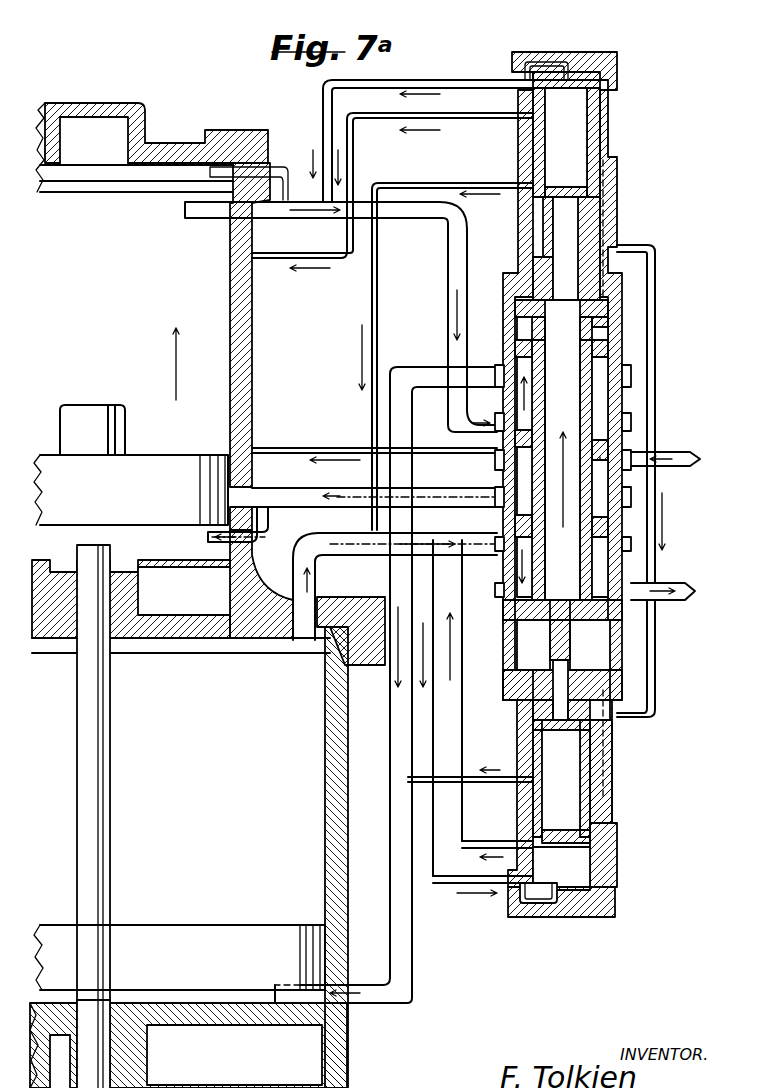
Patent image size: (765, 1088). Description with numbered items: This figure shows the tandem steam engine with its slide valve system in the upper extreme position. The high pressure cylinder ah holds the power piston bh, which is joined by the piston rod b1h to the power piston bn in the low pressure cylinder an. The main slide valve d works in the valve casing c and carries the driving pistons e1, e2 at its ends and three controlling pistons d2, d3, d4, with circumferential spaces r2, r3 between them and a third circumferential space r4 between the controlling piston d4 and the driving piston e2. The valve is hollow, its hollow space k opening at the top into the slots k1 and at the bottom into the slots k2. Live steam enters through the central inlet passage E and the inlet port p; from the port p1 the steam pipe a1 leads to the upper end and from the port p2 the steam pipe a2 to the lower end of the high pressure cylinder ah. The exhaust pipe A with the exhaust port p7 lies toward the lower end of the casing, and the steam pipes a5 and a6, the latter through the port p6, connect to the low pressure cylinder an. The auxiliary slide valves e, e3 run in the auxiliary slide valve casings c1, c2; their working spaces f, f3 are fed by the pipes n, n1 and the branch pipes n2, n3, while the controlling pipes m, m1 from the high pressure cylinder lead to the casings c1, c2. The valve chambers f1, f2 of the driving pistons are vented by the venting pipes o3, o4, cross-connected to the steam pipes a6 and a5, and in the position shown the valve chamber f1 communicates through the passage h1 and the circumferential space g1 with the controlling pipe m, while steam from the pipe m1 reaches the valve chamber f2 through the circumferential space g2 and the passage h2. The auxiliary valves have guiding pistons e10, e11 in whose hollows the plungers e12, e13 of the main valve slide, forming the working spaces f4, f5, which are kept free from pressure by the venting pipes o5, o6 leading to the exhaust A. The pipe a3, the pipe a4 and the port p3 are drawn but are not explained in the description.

The pipe a3 is at (284, 168).
The pipe n is at (444, 90).
The controlling pipe m is at (275, 262).
The venting pipe o3 is at (372, 285).
The steam pipe a1 is at (455, 250).
The high pressure cylinder ah is at (230, 320).
The power piston bh is at (143, 470).
The controlling pipe m1 is at (331, 448).
The steam pipe a2 is at (300, 497).
The pipe a4 is at (259, 538).
The steam pipe a6 is at (347, 545).
The steam pipe a5 is at (408, 385).
The venting pipe o4 is at (488, 784).
The pipe n1 is at (447, 885).
The low pressure cylinder an is at (322, 818).
The piston rod b1h is at (100, 690).
The power piston bn is at (185, 942).
The valve casing c is at (512, 312).
The passage h1 is at (610, 178).
The working space f is at (616, 66).
The branch pipe n2 is at (566, 62).
The auxiliary slide valve e is at (608, 96).
The auxiliary slide valve casing c1 is at (605, 117).
The circumferential space g1 is at (590, 142).
The working space f4 is at (535, 232).
The guiding piston e10 is at (590, 225).
The plunger e12 is at (572, 273).
The valve chamber f1 is at (608, 320).
The slots k1 is at (592, 327).
The driving piston e1 is at (606, 336).
The controlling piston d2 is at (612, 350).
The hollow space k is at (562, 450).
The main slide valve d is at (578, 408).
The circumferential space r2 is at (598, 412).
The controlling piston d3 is at (612, 448).
The circumferential space r3 is at (603, 512).
The controlling piston d4 is at (612, 530).
The circumferential space r4 is at (605, 572).
The slots k2 is at (585, 585).
The port p3 is at (632, 378).
The port p1 is at (632, 422).
The inlet port p is at (632, 468).
The steam inlet passage E is at (674, 460).
The port p2 is at (632, 497).
The port p6 is at (632, 545).
The exhaust port p7 is at (631, 600).
The exhaust pipe A is at (671, 594).
The venting pipe o5 is at (657, 248).
The venting pipe o6 is at (657, 683).
The driving piston e2 is at (612, 612).
The valve chamber f2 is at (600, 650).
The plunger e13 is at (572, 710).
The guiding piston e11 is at (592, 710).
The working space f5 is at (537, 722).
The passage h2 is at (612, 742).
The auxiliary slide valve casing c2 is at (615, 835).
The circumferential space g2 is at (580, 800).
The auxiliary slide valve e3 is at (590, 860).
The working space f3 is at (617, 880).
The branch pipe n3 is at (515, 905).